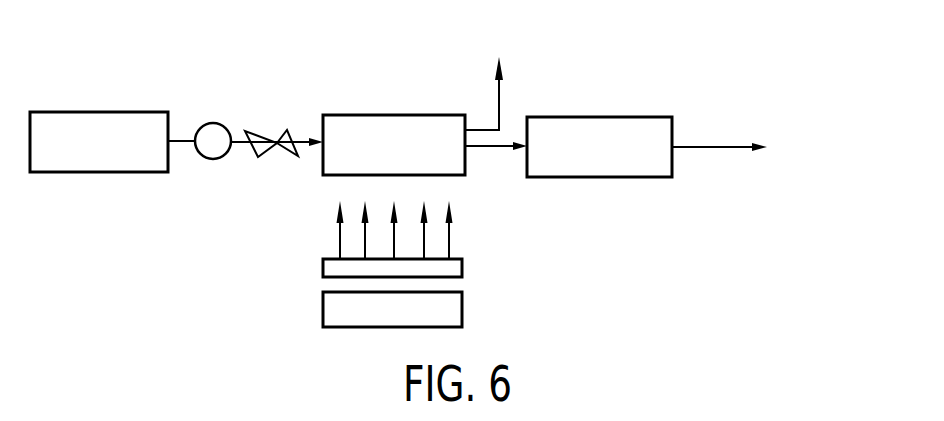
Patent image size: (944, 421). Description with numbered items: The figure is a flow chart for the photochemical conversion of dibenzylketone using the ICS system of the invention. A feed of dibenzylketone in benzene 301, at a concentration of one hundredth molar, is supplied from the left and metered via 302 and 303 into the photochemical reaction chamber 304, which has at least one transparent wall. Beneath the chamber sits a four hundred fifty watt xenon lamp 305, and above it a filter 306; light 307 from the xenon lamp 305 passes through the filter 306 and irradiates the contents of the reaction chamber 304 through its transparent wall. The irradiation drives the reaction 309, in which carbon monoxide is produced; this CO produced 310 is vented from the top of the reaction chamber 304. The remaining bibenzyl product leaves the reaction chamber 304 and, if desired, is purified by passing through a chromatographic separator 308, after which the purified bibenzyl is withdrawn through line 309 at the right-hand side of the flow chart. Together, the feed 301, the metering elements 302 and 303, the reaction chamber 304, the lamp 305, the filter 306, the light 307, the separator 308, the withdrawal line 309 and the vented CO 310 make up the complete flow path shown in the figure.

The dibenzylketone in benzene 301 is at (115, 157).
The metering device 302 is at (213, 123).
The metering device 303 is at (283, 127).
The photochemical reaction chamber 304 is at (427, 160).
The xenon lamp 305 is at (464, 313).
The filter 306 is at (464, 268).
The light 307 is at (458, 227).
The chromatographic separator 308 is at (627, 162).
The line 309 is at (754, 146).
The CO produced 310 is at (502, 77).